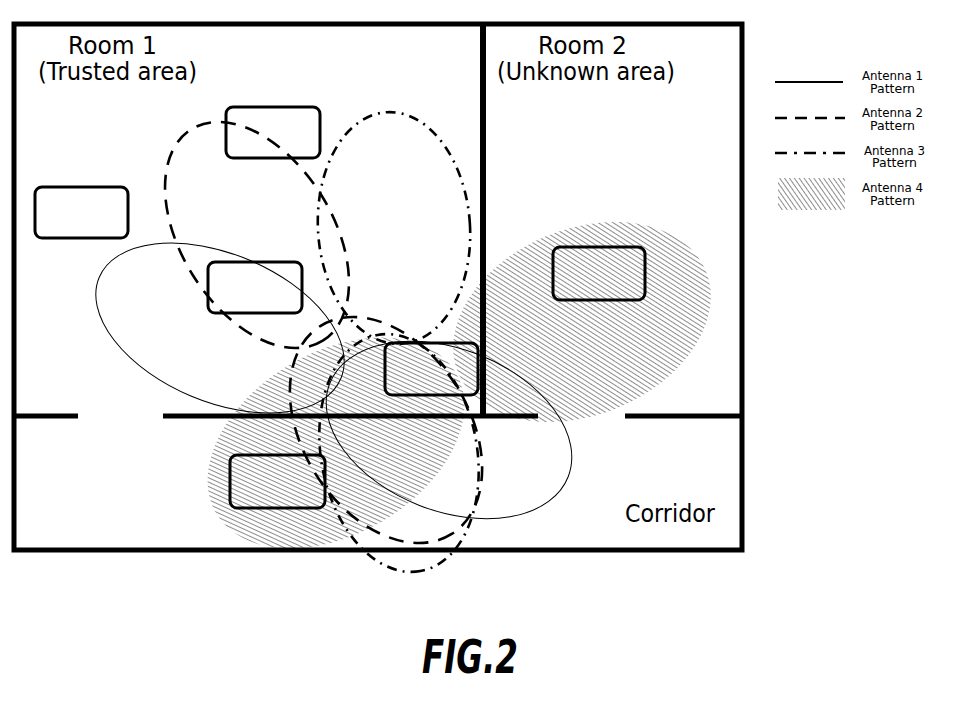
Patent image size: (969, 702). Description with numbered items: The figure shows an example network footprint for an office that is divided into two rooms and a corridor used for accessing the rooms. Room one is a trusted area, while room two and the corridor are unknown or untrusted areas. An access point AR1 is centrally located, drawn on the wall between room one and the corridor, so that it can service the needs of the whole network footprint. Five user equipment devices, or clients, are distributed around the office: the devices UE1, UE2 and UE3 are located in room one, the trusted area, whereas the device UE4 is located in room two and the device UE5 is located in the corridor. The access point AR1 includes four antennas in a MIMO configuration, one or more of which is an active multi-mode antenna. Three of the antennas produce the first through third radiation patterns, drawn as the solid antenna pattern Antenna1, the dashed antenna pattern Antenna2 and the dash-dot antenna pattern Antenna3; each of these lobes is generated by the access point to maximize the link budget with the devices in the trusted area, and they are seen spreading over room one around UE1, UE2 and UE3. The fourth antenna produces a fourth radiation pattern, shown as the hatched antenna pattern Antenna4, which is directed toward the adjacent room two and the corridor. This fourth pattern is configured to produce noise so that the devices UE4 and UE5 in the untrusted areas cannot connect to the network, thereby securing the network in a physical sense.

The user equipment device UE1 is at (81, 212).
The user equipment device UE2 is at (273, 132).
The user equipment device UE3 is at (255, 287).
The user equipment device UE4 is at (599, 273).
The user equipment device UE5 is at (277, 481).
The access point AR1 is at (431, 369).
The first radiation pattern Antenna1 is at (334, 380).
The second radiation pattern Antenna2 is at (324, 333).
The third radiation pattern Antenna3 is at (399, 346).
The fourth radiation pattern Antenna4 is at (455, 388).